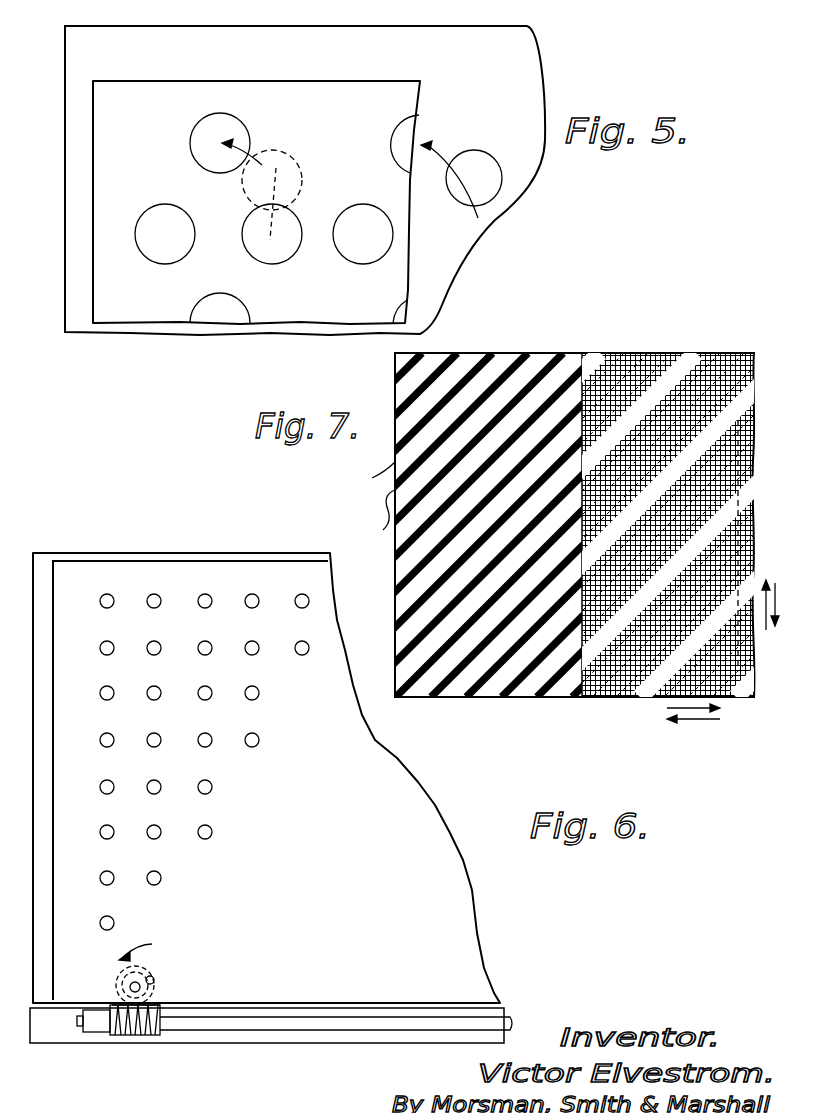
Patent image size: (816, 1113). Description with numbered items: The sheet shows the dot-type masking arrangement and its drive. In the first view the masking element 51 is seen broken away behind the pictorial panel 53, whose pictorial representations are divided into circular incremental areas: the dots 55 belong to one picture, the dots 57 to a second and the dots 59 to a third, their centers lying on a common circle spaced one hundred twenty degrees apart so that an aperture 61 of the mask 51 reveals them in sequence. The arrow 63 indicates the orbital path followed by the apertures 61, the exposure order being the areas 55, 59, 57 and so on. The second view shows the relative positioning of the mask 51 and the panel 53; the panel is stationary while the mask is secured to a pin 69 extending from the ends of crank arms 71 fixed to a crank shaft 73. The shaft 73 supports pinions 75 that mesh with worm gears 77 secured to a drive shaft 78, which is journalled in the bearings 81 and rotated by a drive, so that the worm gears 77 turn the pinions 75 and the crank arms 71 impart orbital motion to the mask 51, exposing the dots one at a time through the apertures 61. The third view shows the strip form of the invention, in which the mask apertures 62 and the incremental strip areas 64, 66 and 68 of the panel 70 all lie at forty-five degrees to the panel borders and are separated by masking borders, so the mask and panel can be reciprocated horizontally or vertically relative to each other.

In FIG. 5, the masking element 51 is at (65, 157).
In FIG. 6, the masking element 51 is at (165, 566).
In FIG. 5, the pictorial panel 53 is at (130, 315).
In FIG. 6, the pictorial panel 53 is at (40, 690).
In FIG. 5, the incremental areas 55 is at (152, 253).
In FIG. 5, the incremental areas 57 is at (192, 137).
In FIG. 5, the incremental areas 59 is at (272, 264).
In FIG. 5, the aperture 61 is at (482, 153).
In FIG. 6, the aperture 61 is at (147, 605).
In FIG. 7, the mask apertures 62 is at (733, 353).
In FIG. 5, the arrow 63 is at (250, 176).
In FIG. 6, the arrow 63 is at (143, 940).
In FIG. 7, the incremental strip area 64 is at (400, 606).
In FIG. 7, the incremental strip area 66 is at (402, 634).
In FIG. 7, the incremental strip area 68 is at (493, 712).
In FIG. 7, the pin 69 is at (369, 496).
In FIG. 6, the pin 69 is at (155, 978).
In FIG. 7, the panel 70 is at (478, 353).
In FIG. 6, the crank arms 71 is at (118, 967).
In FIG. 6, the crank shaft 73 is at (128, 986).
In FIG. 6, the pinions 75 is at (150, 1010).
In FIG. 6, the worm gears 77 is at (140, 1037).
In FIG. 6, the drive shaft 78 is at (199, 1030).
In FIG. 6, the bearings 81 is at (96, 1033).